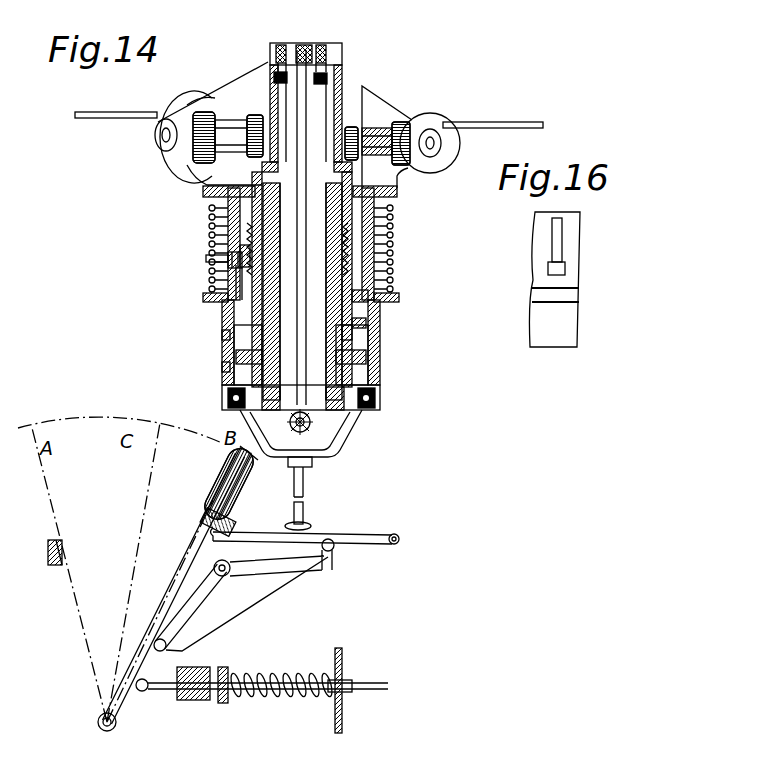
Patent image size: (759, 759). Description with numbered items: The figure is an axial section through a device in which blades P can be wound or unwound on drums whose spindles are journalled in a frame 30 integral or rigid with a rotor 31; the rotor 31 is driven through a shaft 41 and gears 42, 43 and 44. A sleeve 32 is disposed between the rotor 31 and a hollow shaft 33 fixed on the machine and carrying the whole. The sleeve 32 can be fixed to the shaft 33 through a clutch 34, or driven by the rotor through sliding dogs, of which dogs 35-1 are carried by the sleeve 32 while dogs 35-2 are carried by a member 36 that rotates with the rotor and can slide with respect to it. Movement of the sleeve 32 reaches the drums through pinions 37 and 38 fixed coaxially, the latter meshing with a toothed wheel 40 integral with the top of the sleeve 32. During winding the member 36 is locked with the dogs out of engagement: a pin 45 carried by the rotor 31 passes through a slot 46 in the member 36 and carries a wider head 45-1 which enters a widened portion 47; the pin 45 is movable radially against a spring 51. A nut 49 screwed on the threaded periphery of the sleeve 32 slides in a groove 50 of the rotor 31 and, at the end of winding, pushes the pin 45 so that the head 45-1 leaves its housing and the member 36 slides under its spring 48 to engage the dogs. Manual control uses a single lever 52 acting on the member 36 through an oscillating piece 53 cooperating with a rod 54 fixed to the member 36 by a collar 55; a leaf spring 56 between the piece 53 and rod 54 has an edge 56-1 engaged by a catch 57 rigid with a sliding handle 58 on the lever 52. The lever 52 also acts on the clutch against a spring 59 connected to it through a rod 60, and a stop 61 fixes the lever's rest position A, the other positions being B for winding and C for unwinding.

In FIG. 14, the blades P is at (118, 113).
In FIG. 14, the frame 30 is at (378, 102).
In FIG. 14, the rotor 31 is at (228, 300).
In FIG. 14, the sleeve 32 is at (375, 297).
In FIG. 14, the hollow shaft 33 is at (357, 328).
In FIG. 14, the clutch 34 is at (352, 270).
In FIG. 14, the sliding dogs 35-1 is at (227, 365).
In FIG. 14, the sliding dogs 35-2 is at (223, 333).
In FIG. 14, the sliding member 36 is at (225, 342).
In FIG. 16, the sliding member 36 is at (582, 258).
In FIG. 14, the pinion 37 is at (203, 114).
In FIG. 14, the pinion 38 is at (254, 116).
In FIG. 14, the toothed wheel 40 is at (205, 180).
In FIG. 14, the shaft 41 is at (298, 233).
In FIG. 14, the gear 42 is at (300, 44).
In FIG. 14, the gear 43 is at (326, 46).
In FIG. 14, the gear 44 is at (342, 50).
In FIG. 14, the pin 45 is at (208, 270).
In FIG. 14, the head 45-1 is at (233, 252).
In FIG. 16, the slot 46 is at (562, 238).
In FIG. 16, the widened portion 47 is at (549, 268).
In FIG. 14, the spring 48 is at (207, 259).
In FIG. 14, the nut 49 is at (352, 325).
In FIG. 14, the groove 50 is at (238, 280).
In FIG. 14, the spring 51 is at (243, 260).
In FIG. 14, the lever 52 is at (182, 563).
In FIG. 14, the oscillating piece 53 is at (286, 573).
In FIG. 14, the rod 54 is at (297, 508).
In FIG. 14, the collar 55 is at (380, 398).
In FIG. 14, the leaf spring 56 is at (357, 526).
In FIG. 14, the edge 56-1 is at (217, 527).
In FIG. 14, the catch 57 is at (227, 525).
In FIG. 14, the sliding handle 58 is at (240, 470).
In FIG. 14, the spring 59 is at (267, 674).
In FIG. 14, the rod 60 is at (182, 688).
In FIG. 14, the stop 61 is at (55, 556).